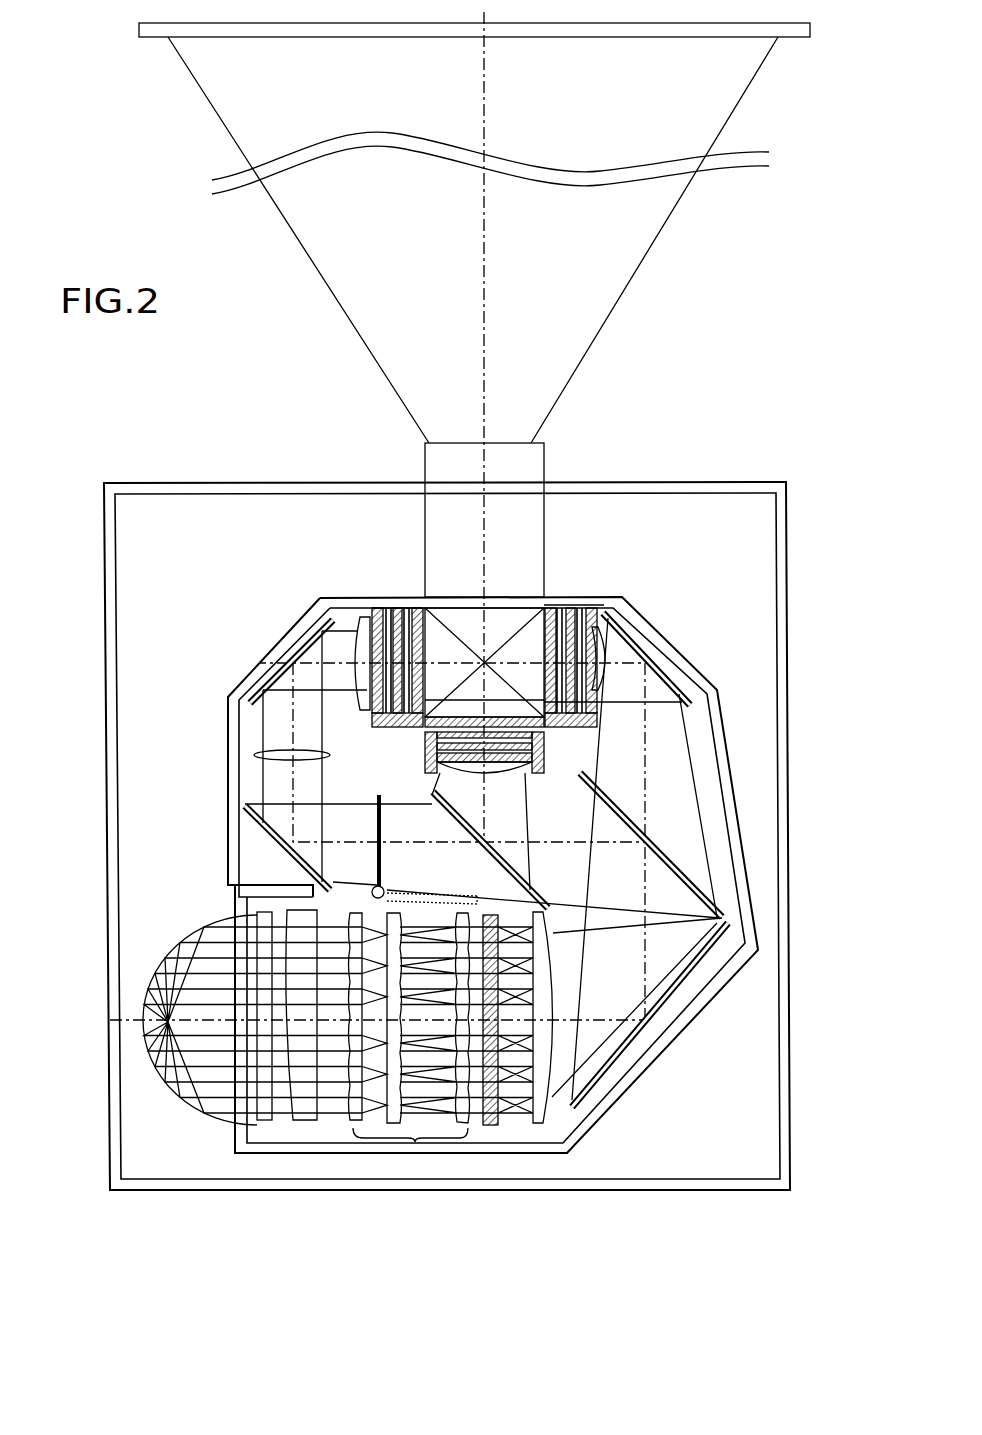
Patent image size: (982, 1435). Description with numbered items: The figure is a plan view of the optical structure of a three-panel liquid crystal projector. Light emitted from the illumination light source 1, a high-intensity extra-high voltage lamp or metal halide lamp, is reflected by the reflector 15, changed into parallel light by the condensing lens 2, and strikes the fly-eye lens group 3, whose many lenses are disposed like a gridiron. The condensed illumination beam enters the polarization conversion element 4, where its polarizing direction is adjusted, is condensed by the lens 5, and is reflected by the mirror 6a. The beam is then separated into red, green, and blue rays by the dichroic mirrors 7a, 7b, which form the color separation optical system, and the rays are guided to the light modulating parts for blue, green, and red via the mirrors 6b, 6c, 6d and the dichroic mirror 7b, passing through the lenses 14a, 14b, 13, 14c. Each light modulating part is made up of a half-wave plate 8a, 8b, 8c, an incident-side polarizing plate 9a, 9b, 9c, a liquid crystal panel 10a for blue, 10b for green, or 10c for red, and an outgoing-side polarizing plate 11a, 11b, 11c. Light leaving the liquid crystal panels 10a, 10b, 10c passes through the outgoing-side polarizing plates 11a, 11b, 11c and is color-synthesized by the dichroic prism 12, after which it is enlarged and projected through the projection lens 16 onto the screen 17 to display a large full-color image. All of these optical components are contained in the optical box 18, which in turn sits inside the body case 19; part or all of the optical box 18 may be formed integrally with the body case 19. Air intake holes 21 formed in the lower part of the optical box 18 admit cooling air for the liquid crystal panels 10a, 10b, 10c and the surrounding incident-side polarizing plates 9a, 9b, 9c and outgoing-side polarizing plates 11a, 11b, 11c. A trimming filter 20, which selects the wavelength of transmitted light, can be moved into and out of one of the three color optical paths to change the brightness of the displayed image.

The illumination light source 1 is at (145, 1020).
The condensing lens 2 is at (297, 1122).
The fly-eye lens group 3 is at (415, 1142).
The polarization conversion element 4 is at (490, 1127).
The lens 5 is at (545, 1125).
The mirror 6a is at (668, 1000).
The mirror 6b is at (627, 630).
The mirror 6c is at (250, 830).
The mirror 6d is at (297, 630).
The dichroic mirror 7a is at (693, 868).
The dichroic mirror 7b is at (474, 892).
The half-wave plate 8a is at (603, 593).
The half-wave plate 8b is at (428, 750).
The half-wave plate 8c is at (372, 718).
The incident-side polarizing plate 9a is at (593, 595).
The incident-side polarizing plate 9b is at (544, 735).
The incident-side polarizing plate 9c is at (385, 603).
The liquid crystal panel 10a is at (580, 595).
The liquid crystal panel 10b is at (544, 746).
The liquid crystal panel 10c is at (398, 603).
The outgoing-side polarizing plate 11a is at (567, 595).
The outgoing-side polarizing plate 11b is at (544, 757).
The outgoing-side polarizing plate 11c is at (412, 603).
The dichroic prism 12 is at (548, 595).
The lens 13 is at (260, 752).
The lens 14a is at (610, 675).
The lens 14b is at (430, 768).
The lens 14c is at (355, 618).
The reflector 15 is at (207, 1090).
The projection lens 16 is at (545, 447).
The screen 17 is at (212, 38).
The optical box 18 is at (228, 803).
The body case 19 is at (788, 845).
The trimming filter 20 is at (373, 815).
The air intake holes 21 is at (372, 603).